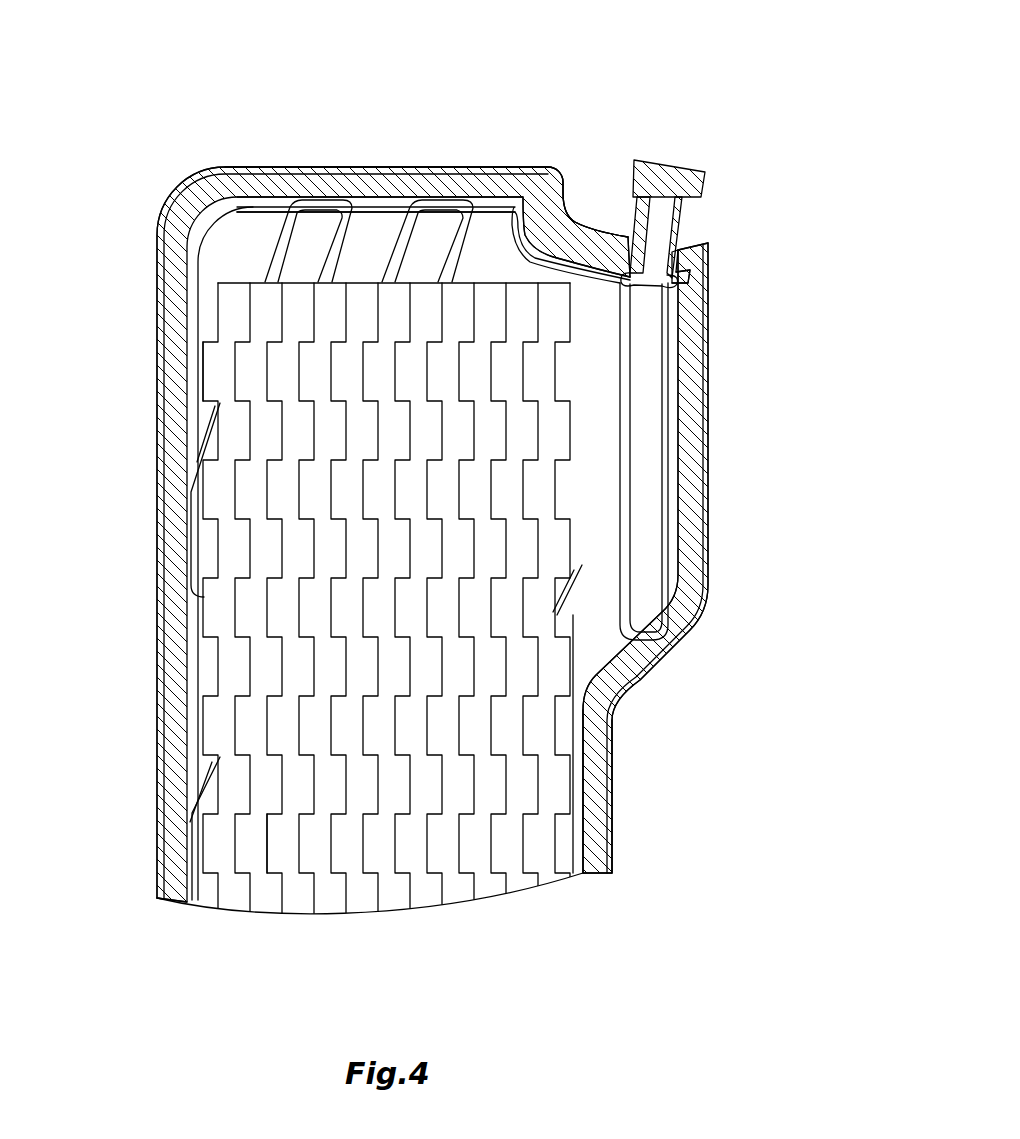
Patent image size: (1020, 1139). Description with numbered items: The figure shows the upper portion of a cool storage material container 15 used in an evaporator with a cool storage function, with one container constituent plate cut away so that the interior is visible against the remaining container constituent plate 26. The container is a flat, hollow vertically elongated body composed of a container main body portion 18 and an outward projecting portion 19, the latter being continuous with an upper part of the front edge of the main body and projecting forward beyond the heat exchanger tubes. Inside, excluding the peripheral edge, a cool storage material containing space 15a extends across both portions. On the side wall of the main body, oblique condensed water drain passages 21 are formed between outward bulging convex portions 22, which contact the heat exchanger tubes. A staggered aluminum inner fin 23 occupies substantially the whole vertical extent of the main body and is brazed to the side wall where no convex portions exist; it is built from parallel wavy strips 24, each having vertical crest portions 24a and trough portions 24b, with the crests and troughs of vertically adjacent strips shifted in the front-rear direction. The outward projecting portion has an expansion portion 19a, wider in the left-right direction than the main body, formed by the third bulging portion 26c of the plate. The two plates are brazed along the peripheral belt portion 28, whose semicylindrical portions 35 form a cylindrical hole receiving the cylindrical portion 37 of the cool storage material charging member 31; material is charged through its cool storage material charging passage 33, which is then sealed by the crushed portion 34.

The cool storage material container 15 is at (597, 92).
The cool storage material containing space 15a is at (586, 830).
The container main body portion 18 is at (165, 642).
The outward projecting portion 19 is at (700, 390).
The expansion portion 19a is at (676, 553).
The condensed water drain passage 21 is at (370, 222).
The convex portion 22 is at (322, 213).
The inner fin 23 is at (247, 266).
The wavy strip 24 is at (228, 316).
The crest portion 24a is at (187, 262).
The trough portion 24b is at (262, 280).
The container constituent plate 26 is at (510, 230).
The third bulging portion 26c is at (660, 490).
The peripheral belt portion 28 is at (190, 552).
The cool storage material charging member 31 is at (684, 228).
The cool storage material charging passage 33 is at (690, 247).
The crushed portion 34 is at (690, 168).
The semicylindrical portion 35 is at (625, 245).
The cylindrical portion 37 is at (690, 259).